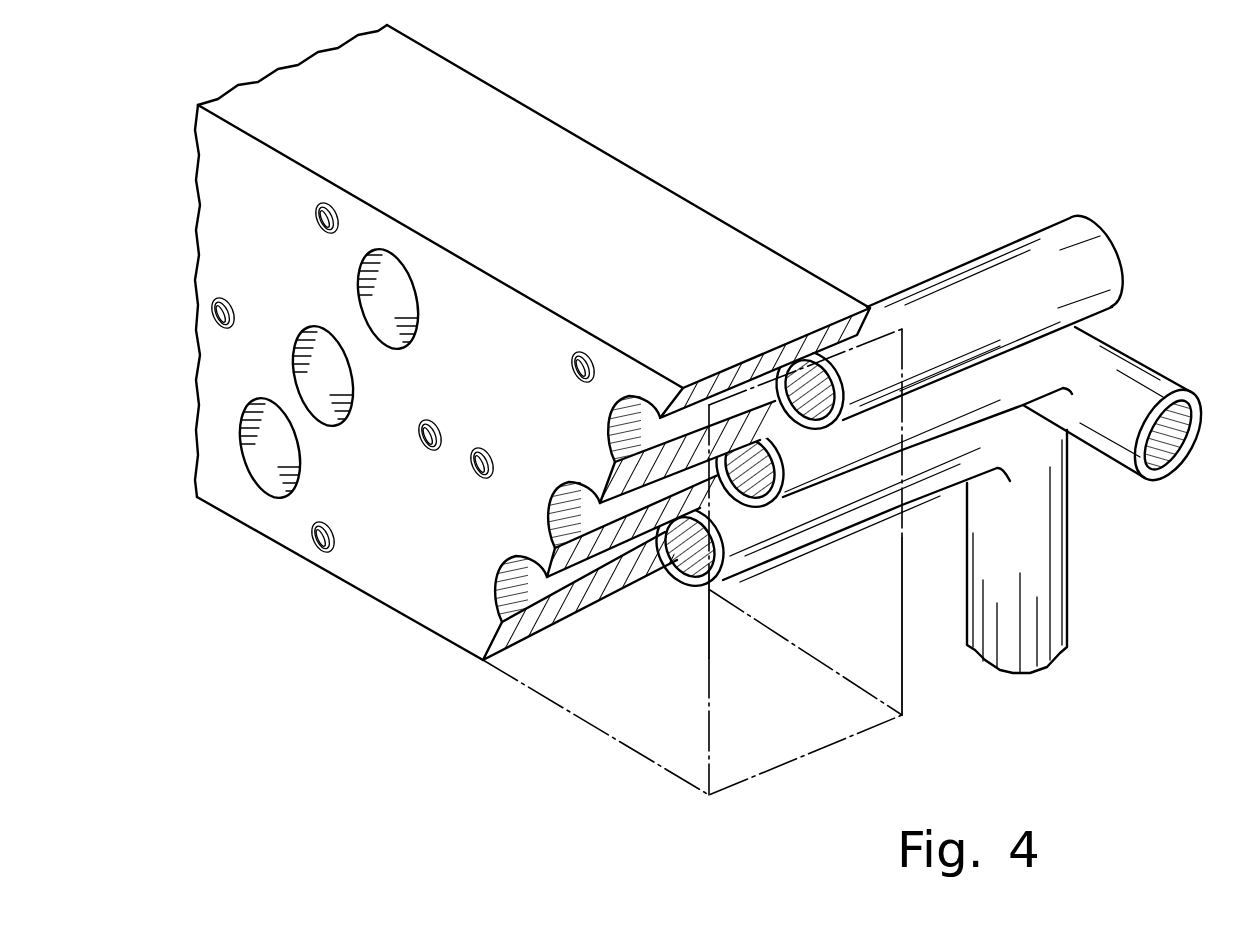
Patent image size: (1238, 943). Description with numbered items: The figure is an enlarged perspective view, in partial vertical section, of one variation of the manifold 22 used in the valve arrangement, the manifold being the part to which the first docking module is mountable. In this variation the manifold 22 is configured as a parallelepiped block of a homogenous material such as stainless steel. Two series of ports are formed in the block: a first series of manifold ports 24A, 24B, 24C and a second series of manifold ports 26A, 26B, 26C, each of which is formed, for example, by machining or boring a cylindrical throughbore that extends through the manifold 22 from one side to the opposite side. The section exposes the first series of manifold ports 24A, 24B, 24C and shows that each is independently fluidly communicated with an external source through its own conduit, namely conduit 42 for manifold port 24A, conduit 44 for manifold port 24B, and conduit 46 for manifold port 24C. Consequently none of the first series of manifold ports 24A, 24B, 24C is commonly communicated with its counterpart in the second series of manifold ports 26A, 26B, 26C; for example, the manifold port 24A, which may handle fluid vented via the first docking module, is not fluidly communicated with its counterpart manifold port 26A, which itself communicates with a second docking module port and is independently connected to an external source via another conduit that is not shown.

The manifold 22 is at (226, 200).
The manifold port 26A is at (340, 268).
The manifold port 26B is at (277, 357).
The manifold port 26C is at (223, 452).
The manifold port 24A is at (596, 406).
The manifold port 24B is at (535, 512).
The manifold port 24C is at (474, 604).
The conduit 42 is at (1028, 248).
The conduit 44 is at (1130, 370).
The conduit 46 is at (1057, 580).